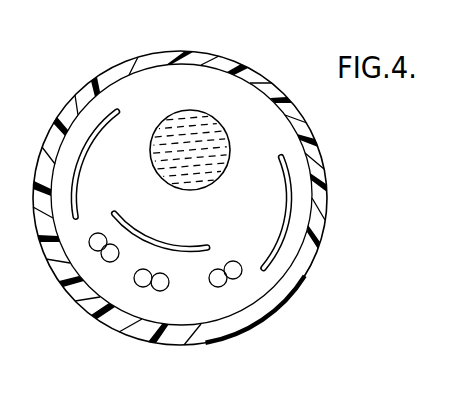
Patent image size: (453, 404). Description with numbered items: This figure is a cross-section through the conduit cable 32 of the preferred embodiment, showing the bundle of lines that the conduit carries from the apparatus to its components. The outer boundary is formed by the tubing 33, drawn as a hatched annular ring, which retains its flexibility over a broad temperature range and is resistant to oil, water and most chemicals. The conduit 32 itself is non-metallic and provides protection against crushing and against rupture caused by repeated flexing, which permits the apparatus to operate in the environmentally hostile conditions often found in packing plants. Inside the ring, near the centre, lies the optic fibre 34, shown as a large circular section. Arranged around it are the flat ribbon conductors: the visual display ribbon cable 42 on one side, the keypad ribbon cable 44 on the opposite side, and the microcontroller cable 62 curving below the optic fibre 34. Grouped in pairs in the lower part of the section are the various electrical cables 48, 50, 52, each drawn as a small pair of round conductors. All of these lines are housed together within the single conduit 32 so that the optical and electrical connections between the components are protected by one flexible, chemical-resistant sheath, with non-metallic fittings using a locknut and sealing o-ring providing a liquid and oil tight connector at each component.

The conduit cable 32 is at (222, 52).
The tubing 33 is at (271, 84).
The optic fibre 34 is at (207, 140).
The visual display ribbon cable 42 is at (293, 172).
The keypad ribbon cable 44 is at (92, 133).
The electrical cable 48 is at (97, 249).
The electrical cable 50 is at (150, 285).
The electrical cable 52 is at (232, 281).
The microcontroller cable 62 is at (188, 249).